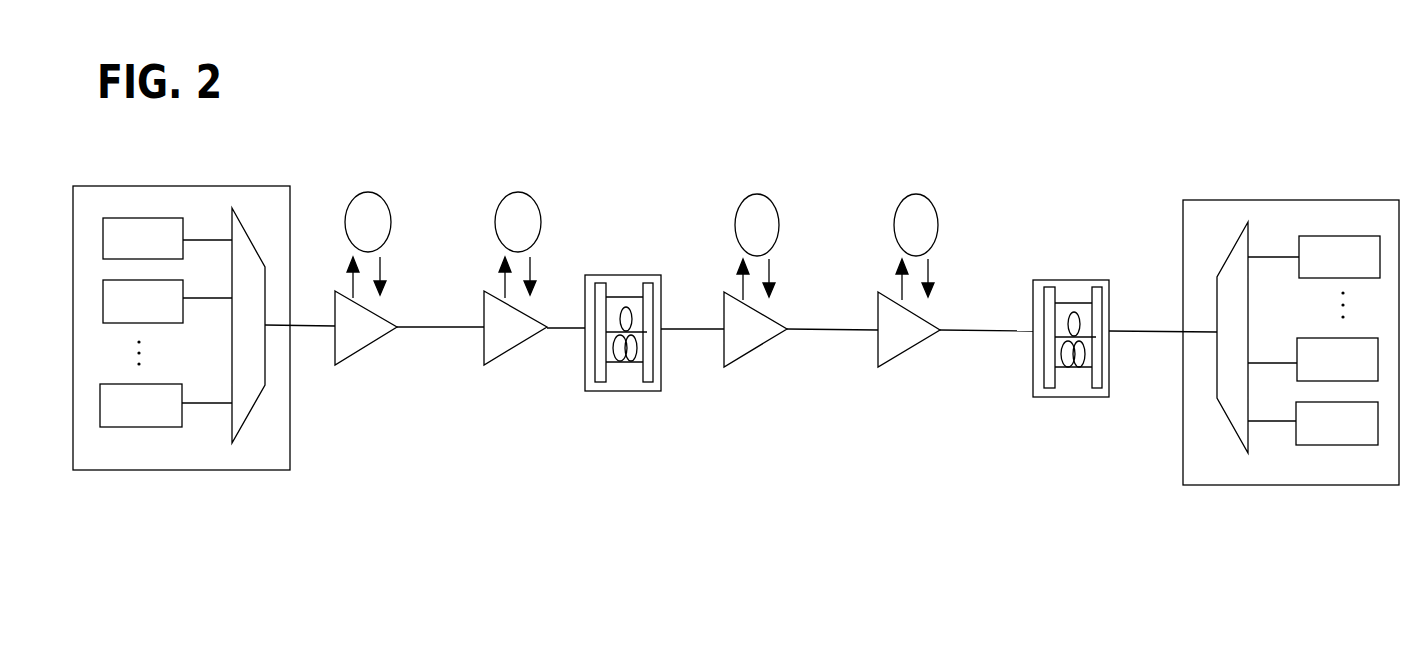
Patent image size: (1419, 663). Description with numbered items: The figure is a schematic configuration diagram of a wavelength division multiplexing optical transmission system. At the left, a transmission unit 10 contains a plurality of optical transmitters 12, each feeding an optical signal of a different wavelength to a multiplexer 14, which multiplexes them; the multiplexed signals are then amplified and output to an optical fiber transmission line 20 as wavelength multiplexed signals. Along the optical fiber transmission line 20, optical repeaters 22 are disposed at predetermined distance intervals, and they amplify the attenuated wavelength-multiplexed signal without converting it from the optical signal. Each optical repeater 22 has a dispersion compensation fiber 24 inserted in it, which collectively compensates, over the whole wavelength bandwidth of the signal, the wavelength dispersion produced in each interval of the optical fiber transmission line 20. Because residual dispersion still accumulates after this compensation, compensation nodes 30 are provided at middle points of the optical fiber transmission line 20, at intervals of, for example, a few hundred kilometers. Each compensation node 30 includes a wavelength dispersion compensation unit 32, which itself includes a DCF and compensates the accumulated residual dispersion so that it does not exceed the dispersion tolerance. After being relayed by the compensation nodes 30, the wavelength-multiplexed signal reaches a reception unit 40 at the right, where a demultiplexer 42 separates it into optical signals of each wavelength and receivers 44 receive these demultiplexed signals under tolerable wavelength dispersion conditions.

The transmission unit 10 is at (181, 348).
The optical transmitters 12 is at (166, 322).
The multiplexer 14 is at (248, 325).
The optical fiber transmission line 20 is at (452, 328).
The optical repeaters 22 is at (637, 340).
The dispersion compensation fiber 24 is at (641, 234).
The compensation nodes 30 is at (813, 376).
The wavelength dispersion compensation unit 32 is at (618, 368).
The reception unit 40 is at (1291, 362).
The demultiplexer 42 is at (1232, 337).
The receivers 44 is at (1314, 340).